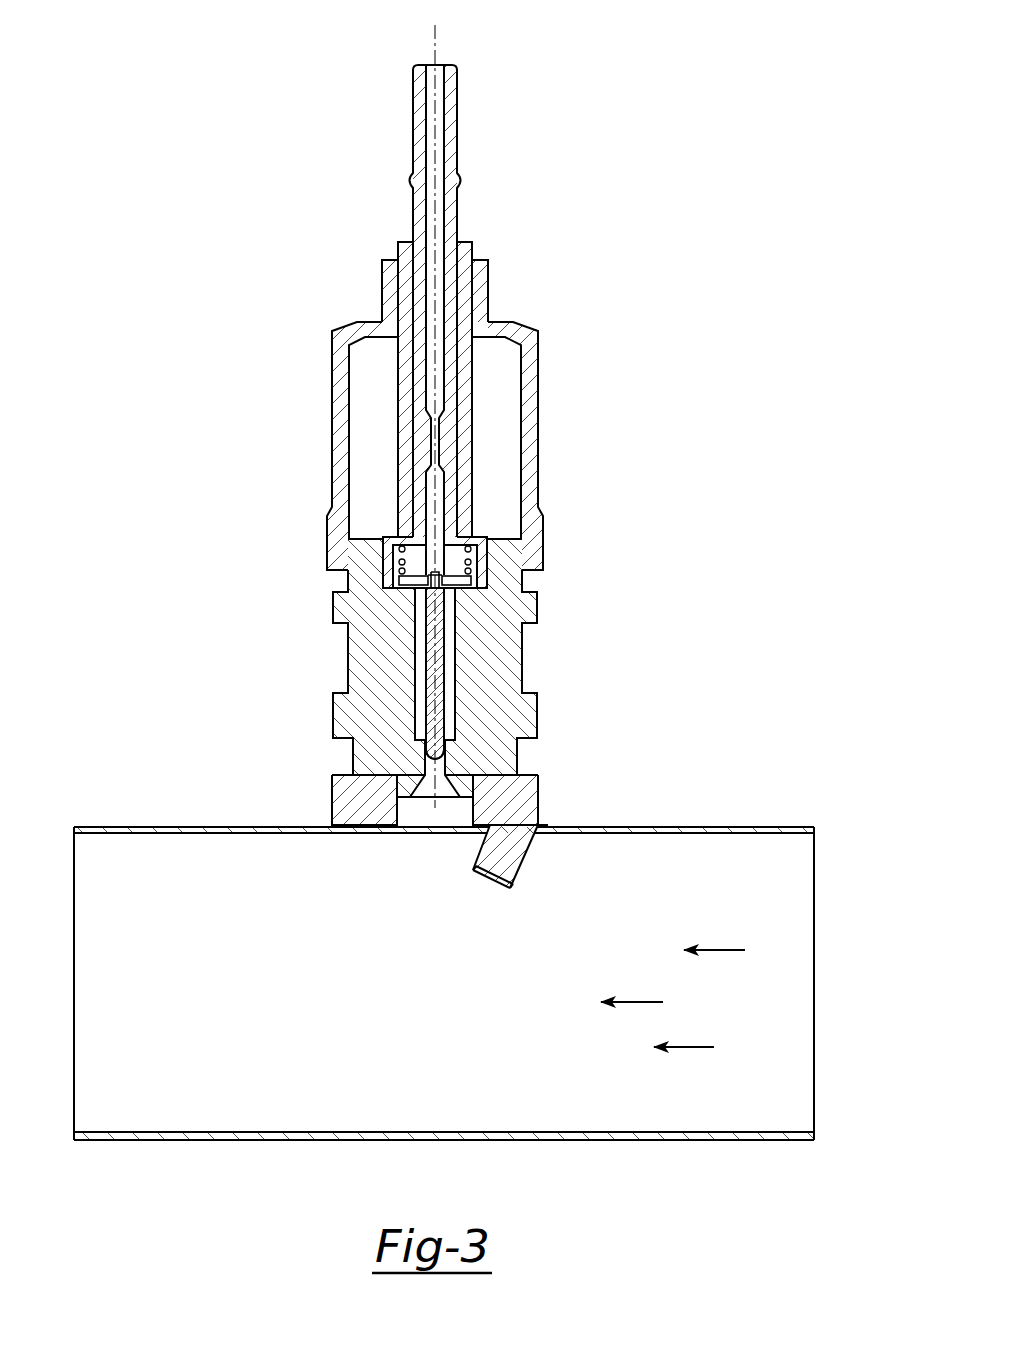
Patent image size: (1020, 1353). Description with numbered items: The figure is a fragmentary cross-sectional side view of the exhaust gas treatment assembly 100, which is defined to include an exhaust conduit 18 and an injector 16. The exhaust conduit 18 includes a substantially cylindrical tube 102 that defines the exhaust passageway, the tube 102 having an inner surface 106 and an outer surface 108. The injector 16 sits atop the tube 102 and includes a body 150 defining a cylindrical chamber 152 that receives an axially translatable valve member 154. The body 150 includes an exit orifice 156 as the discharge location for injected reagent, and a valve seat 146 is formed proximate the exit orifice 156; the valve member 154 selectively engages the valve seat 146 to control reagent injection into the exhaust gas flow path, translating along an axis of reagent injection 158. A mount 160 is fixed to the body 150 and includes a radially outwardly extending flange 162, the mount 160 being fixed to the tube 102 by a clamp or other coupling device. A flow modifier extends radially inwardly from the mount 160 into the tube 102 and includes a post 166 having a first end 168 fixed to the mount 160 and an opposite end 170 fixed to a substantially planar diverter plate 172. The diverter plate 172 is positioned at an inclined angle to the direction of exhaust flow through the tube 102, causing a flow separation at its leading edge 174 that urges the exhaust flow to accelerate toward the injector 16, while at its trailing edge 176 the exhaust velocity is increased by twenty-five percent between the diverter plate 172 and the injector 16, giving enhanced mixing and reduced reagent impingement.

The injector 16 is at (570, 428).
The exhaust conduit 18 is at (677, 804).
The exhaust gas treatment assembly 100 is at (683, 506).
The cylindrical tube 102 is at (758, 826).
The inner surface 106 is at (268, 1124).
The outer surface 108 is at (142, 826).
The valve seat 146 is at (437, 757).
The body 150 is at (540, 478).
The cylindrical chamber 152 is at (454, 626).
The valve member 154 is at (430, 650).
The exit orifice 156 is at (430, 774).
The axis of reagent injection 158 is at (433, 154).
The mount 160 is at (338, 800).
The flange 162 is at (616, 780).
The post 166 is at (505, 847).
The first end 168 is at (523, 826).
The opposite end 170 is at (505, 879).
The diverter plate 172 is at (471, 868).
The leading edge 174 is at (512, 888).
The trailing edge 176 is at (477, 870).